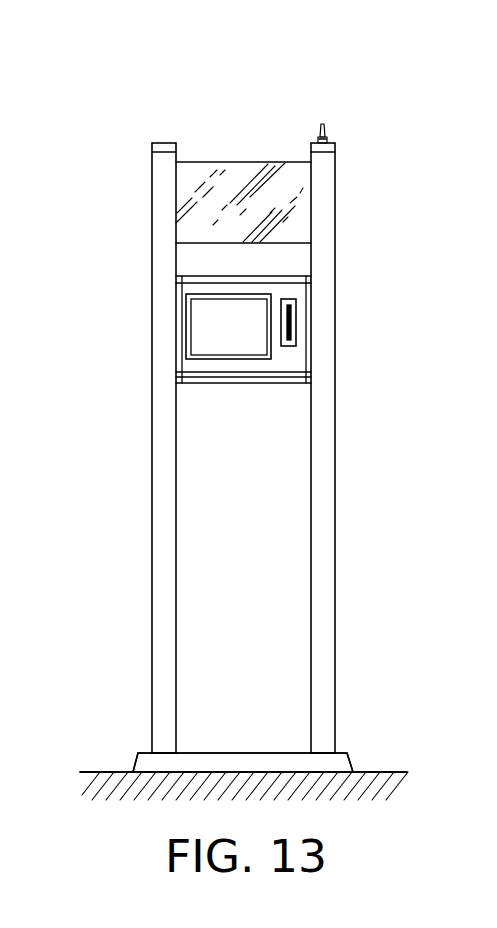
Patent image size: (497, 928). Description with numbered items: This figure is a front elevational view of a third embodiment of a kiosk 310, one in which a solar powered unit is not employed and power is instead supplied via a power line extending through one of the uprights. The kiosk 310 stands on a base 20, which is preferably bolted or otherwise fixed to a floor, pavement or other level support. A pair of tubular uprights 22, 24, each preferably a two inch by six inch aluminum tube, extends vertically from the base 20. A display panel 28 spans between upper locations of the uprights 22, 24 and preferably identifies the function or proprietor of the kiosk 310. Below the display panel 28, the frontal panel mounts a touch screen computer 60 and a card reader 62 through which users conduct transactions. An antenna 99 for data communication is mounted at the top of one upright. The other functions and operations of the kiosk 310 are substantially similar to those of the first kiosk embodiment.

The kiosk 310 is at (138, 75).
The base 20 is at (245, 760).
The tubular upright 22 is at (162, 580).
The tubular upright 24 is at (325, 580).
The display panel 28 is at (190, 185).
The touch screen computer 60 is at (203, 325).
The card reader 62 is at (292, 312).
The antenna 99 is at (326, 135).